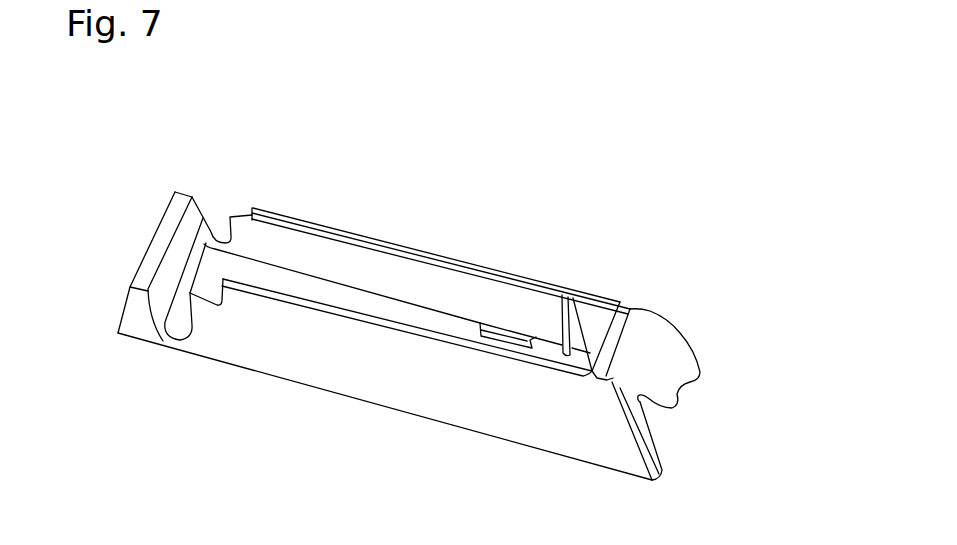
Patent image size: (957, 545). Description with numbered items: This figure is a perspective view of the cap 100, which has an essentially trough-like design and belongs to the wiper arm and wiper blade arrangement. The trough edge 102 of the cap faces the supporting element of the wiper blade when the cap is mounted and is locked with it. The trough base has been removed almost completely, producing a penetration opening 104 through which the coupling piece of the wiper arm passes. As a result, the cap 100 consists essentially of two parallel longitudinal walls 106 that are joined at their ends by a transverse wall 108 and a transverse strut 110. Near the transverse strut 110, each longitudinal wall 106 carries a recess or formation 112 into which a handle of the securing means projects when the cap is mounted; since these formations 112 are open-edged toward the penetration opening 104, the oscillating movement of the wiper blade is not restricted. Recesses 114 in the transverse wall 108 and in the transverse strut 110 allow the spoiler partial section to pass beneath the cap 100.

The cap 100 is at (408, 235).
The trough edge 102 is at (282, 378).
The penetration opening 104 is at (441, 313).
The longitudinal wall 106 is at (337, 249).
The transverse wall 108 is at (678, 350).
The transverse strut 110 is at (156, 246).
The recess 112 is at (217, 208).
The recess 114 is at (658, 420).